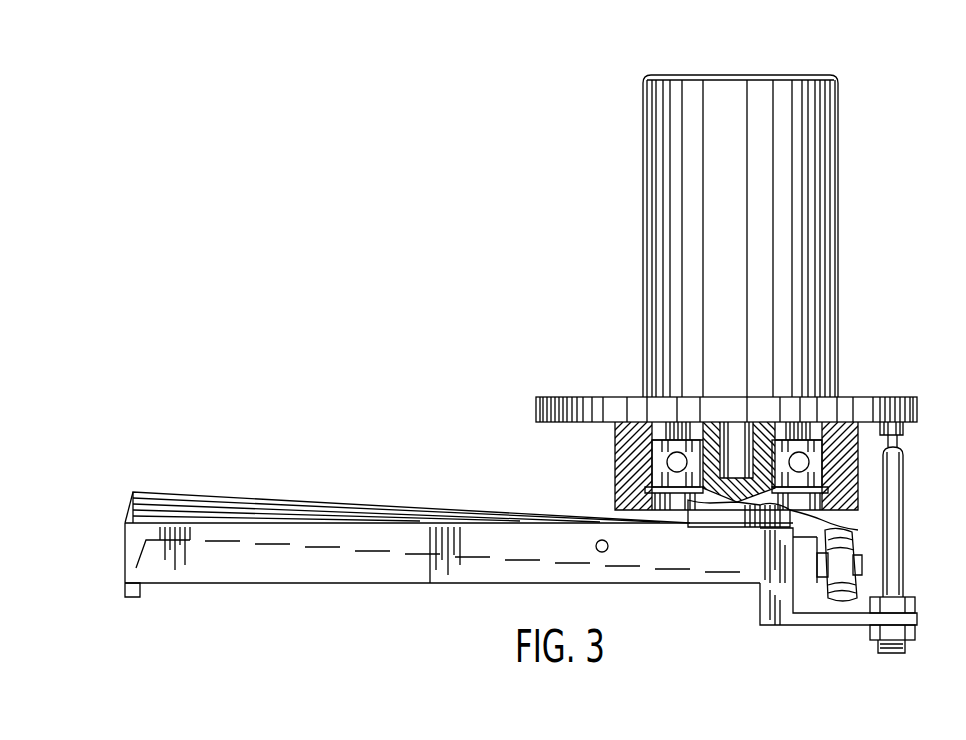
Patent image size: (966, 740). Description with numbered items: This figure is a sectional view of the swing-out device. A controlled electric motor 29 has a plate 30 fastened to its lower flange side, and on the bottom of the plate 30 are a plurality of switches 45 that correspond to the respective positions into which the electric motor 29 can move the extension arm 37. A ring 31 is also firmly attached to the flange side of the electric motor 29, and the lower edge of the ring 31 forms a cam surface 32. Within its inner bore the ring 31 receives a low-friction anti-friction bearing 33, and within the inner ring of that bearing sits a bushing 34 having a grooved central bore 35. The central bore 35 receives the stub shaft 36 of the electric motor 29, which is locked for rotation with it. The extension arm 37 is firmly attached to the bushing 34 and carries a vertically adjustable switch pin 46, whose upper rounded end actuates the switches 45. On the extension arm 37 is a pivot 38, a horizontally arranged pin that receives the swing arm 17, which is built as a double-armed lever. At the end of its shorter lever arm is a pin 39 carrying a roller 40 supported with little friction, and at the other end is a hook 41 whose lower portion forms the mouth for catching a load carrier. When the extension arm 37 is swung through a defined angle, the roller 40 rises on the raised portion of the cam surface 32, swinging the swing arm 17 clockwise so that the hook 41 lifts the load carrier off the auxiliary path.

The swing arm 17 is at (270, 512).
The electric motor 29 is at (825, 112).
The plate 30 is at (915, 406).
The ring 31 is at (628, 467).
The cam surface 32 is at (850, 529).
The anti-friction bearing 33 is at (790, 436).
The bushing 34 is at (707, 512).
The central bore 35 is at (747, 433).
The stub shaft 36 is at (729, 430).
The extension arm 37 is at (398, 568).
The pivot 38 is at (602, 539).
The pin 39 is at (862, 563).
The roller 40 is at (830, 596).
The hook 41 is at (133, 511).
The switches 45 is at (903, 428).
The switch pin 46 is at (903, 487).